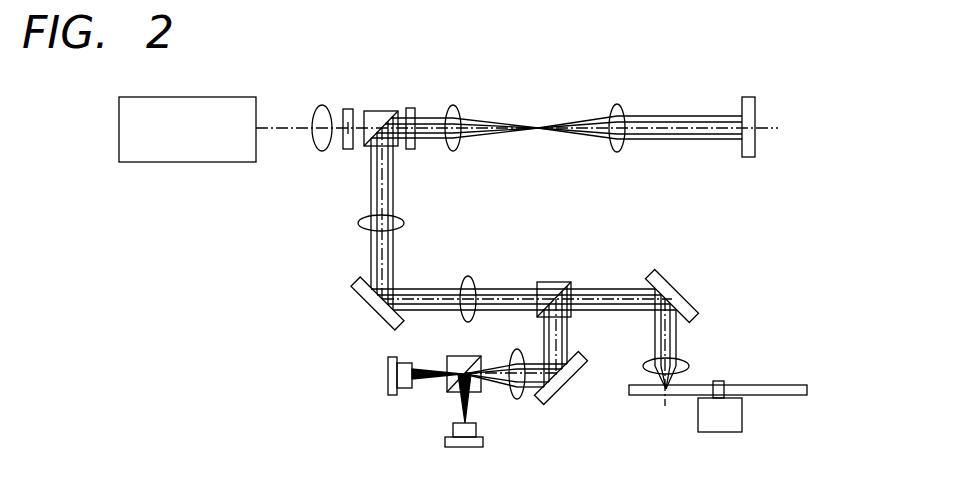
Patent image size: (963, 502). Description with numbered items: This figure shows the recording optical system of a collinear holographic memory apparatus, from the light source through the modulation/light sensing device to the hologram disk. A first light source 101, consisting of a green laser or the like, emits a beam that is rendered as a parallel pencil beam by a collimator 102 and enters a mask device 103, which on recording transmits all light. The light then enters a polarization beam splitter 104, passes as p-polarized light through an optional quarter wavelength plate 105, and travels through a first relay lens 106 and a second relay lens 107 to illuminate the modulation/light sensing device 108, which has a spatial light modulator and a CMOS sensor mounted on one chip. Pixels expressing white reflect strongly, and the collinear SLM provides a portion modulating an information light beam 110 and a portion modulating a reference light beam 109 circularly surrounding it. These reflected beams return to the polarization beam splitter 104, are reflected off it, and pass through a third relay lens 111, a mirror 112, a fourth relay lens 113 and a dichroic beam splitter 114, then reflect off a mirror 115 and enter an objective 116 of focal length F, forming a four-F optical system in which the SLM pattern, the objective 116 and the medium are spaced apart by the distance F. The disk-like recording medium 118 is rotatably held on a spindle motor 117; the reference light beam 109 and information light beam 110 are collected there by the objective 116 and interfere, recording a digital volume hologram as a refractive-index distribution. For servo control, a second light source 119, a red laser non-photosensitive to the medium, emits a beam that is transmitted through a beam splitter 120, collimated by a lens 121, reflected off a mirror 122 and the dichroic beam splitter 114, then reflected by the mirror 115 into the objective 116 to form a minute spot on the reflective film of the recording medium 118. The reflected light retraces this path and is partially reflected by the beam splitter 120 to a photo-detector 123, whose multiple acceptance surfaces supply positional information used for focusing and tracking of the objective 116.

The first light source 101 is at (177, 163).
The collimator 102 is at (322, 105).
The mask device 103 is at (347, 150).
The polarization beam splitter 104 is at (383, 110).
The quarter wavelength plate 105 is at (412, 150).
The first relay lens 106 is at (455, 105).
The second relay lens 107 is at (617, 101).
The modulation/light sensing device 108 is at (748, 96).
The reference light beam 109 is at (683, 115).
The information light beam 110 is at (703, 139).
The third relay lens 111 is at (358, 224).
The mirror 112 is at (360, 302).
The fourth relay lens 113 is at (468, 277).
The dichroic beam splitter 114 is at (556, 282).
The mirror 115 is at (679, 281).
The objective 116 is at (690, 362).
The spindle motor 117 is at (717, 432).
The recording medium 118 is at (788, 396).
The second light source 119 is at (388, 375).
The beam splitter 120 is at (452, 390).
The lens 121 is at (517, 399).
The mirror 122 is at (565, 398).
The photo-detector 123 is at (465, 448).